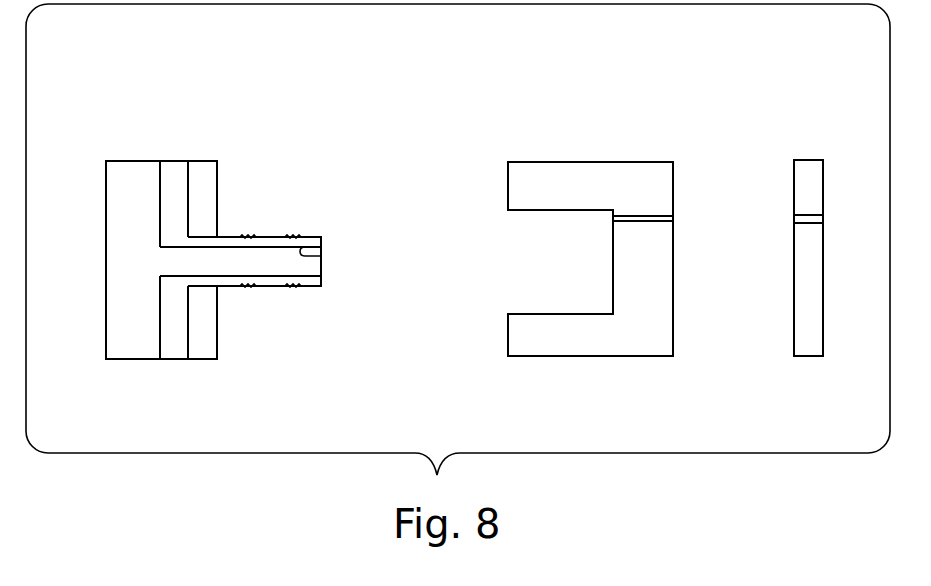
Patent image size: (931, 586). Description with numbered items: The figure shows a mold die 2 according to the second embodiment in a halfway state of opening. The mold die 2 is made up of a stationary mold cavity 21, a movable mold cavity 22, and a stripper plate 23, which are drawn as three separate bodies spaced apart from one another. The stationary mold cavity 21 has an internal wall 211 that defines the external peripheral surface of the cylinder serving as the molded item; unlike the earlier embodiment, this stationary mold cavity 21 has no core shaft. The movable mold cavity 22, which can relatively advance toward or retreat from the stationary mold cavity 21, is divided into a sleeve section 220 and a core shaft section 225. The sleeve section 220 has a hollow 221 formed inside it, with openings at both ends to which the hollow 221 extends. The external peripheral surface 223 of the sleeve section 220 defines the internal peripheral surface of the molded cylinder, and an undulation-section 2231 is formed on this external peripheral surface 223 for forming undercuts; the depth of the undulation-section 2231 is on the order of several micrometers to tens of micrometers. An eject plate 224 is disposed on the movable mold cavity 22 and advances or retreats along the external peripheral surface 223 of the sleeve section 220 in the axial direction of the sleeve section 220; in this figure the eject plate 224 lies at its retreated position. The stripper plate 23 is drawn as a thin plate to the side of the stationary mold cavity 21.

The mold die 2 is at (702, 127).
The stationary mold cavity 21 is at (581, 154).
The internal wall 211 is at (532, 213).
The movable mold cavity 22 is at (221, 159).
The sleeve section 220 is at (327, 228).
The hollow 221 is at (322, 255).
The external peripheral surface 223 is at (262, 235).
The undulation-section 2231 is at (290, 235).
The eject plate 224 is at (200, 172).
The core shaft section 225 is at (137, 160).
The stripper plate 23 is at (807, 154).